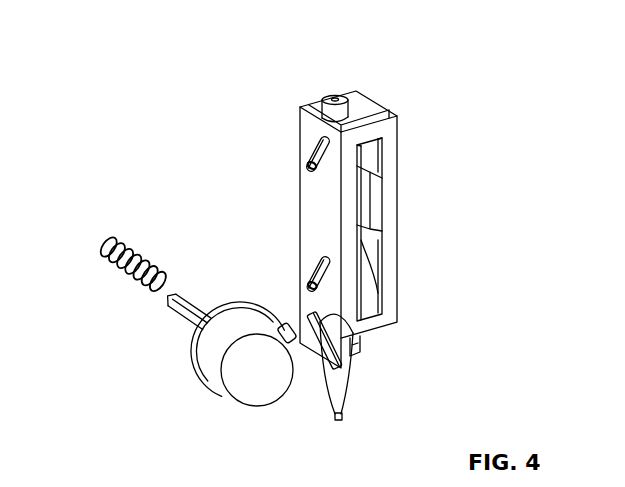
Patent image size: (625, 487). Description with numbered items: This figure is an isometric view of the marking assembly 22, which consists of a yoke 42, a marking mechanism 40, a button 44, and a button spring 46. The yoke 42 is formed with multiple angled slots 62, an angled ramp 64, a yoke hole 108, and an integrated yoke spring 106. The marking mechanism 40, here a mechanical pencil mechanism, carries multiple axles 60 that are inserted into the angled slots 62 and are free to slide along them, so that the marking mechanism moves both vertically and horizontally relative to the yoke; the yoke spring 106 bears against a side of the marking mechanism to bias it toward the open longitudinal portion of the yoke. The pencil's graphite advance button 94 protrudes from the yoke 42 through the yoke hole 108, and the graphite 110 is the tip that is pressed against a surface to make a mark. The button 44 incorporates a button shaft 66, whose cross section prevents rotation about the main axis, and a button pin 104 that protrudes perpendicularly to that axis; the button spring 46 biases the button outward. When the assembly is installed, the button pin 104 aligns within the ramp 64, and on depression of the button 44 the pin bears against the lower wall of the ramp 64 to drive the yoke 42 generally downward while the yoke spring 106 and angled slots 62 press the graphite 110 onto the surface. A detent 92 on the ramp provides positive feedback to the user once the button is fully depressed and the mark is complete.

The marking assembly 22 is at (323, 88).
The marking mechanism 40 is at (340, 116).
The yoke 42 is at (391, 110).
The yoke hole 108 is at (382, 149).
The graphite advance button 94 is at (376, 210).
The yoke spring 106 is at (370, 302).
The detent 92 is at (358, 338).
The graphite 110 is at (342, 418).
The ramp 64 is at (310, 328).
The button 44 is at (257, 376).
The button pin 104 is at (284, 326).
The button shaft 66 is at (183, 320).
The button spring 46 is at (117, 268).
The angled slots 62 is at (313, 280).
The axles 60 is at (327, 264).